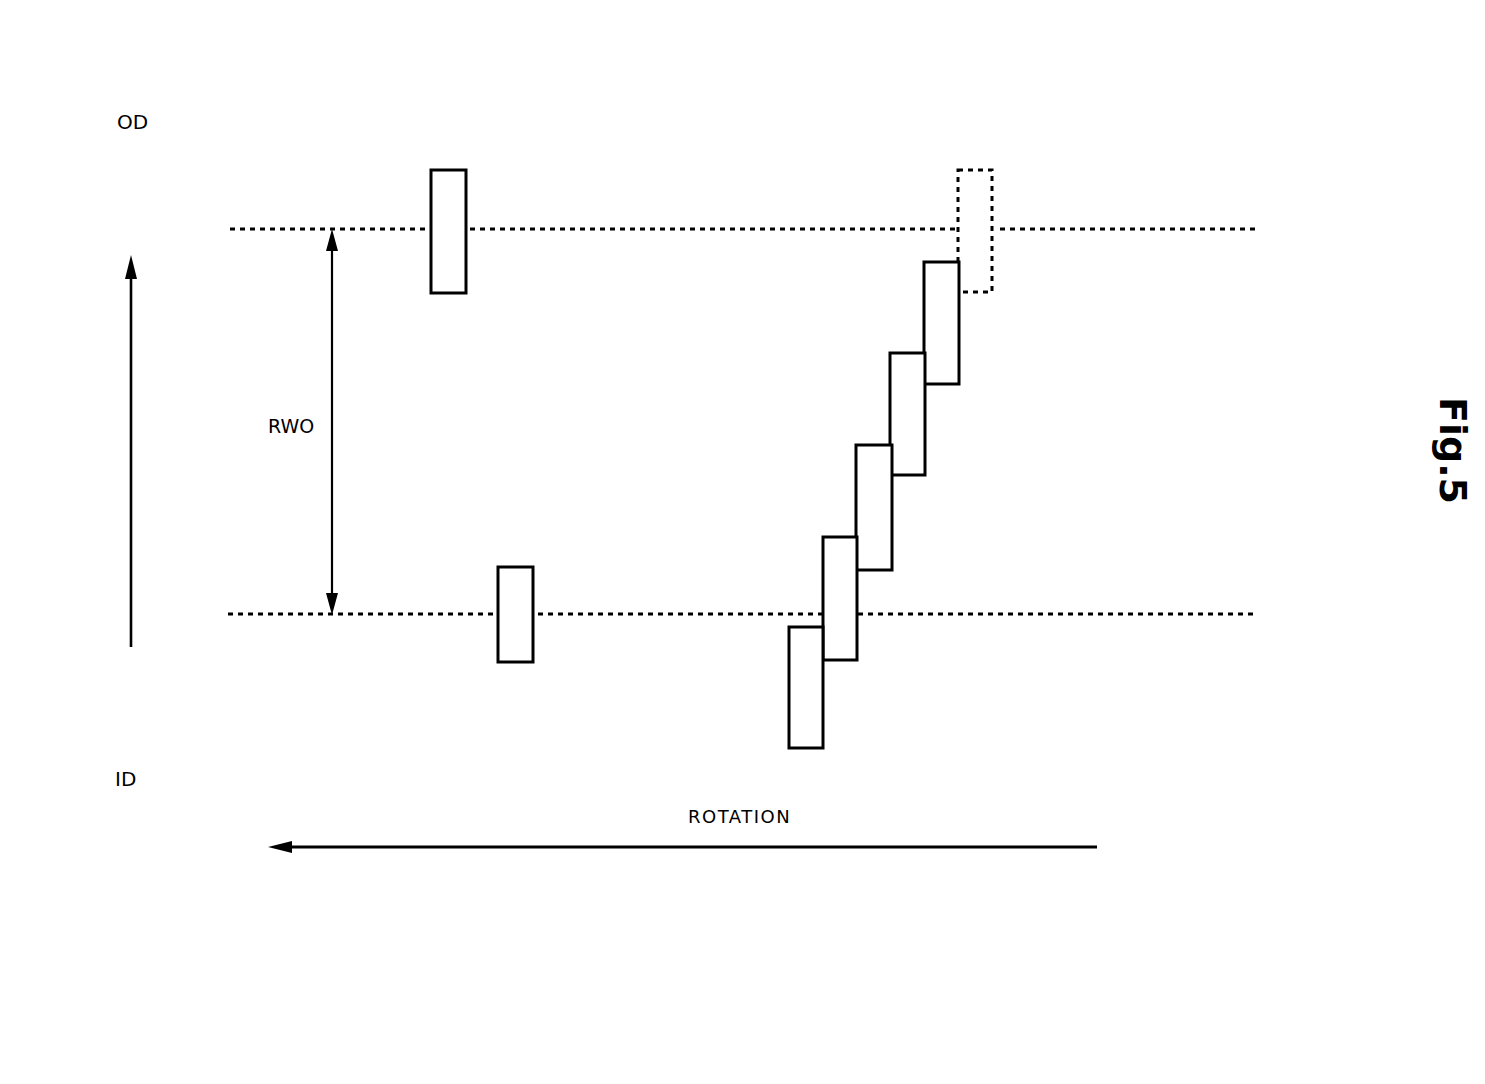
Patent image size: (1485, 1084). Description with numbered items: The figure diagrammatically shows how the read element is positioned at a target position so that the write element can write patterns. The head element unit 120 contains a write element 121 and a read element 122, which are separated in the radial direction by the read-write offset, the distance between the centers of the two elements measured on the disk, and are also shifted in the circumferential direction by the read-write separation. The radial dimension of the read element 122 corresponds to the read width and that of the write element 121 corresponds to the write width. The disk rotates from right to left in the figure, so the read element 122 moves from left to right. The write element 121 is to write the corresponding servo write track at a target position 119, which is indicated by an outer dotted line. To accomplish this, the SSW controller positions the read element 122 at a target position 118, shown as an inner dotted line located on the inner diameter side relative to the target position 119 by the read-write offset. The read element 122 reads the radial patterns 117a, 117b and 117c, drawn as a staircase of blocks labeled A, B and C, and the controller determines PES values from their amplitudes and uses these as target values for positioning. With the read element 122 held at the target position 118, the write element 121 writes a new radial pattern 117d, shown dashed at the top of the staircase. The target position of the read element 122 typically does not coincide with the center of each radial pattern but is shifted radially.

The radial pattern 117a is at (823, 731).
The radial pattern 117b is at (857, 640).
The radial pattern 117c is at (892, 551).
The radial pattern 117d is at (993, 185).
The target position 118 is at (1118, 617).
The target position 119 is at (1155, 231).
The head element unit 120 is at (545, 416).
The write element 121 is at (466, 278).
The read element 122 is at (507, 567).